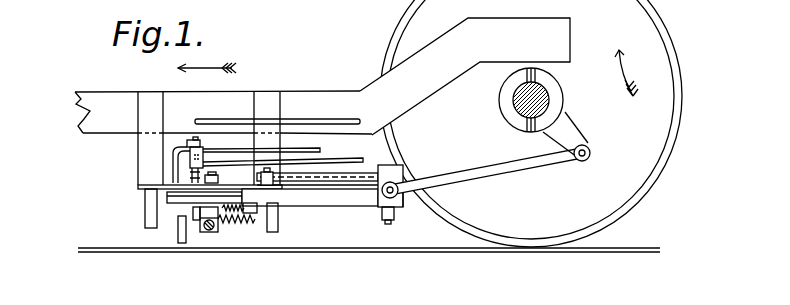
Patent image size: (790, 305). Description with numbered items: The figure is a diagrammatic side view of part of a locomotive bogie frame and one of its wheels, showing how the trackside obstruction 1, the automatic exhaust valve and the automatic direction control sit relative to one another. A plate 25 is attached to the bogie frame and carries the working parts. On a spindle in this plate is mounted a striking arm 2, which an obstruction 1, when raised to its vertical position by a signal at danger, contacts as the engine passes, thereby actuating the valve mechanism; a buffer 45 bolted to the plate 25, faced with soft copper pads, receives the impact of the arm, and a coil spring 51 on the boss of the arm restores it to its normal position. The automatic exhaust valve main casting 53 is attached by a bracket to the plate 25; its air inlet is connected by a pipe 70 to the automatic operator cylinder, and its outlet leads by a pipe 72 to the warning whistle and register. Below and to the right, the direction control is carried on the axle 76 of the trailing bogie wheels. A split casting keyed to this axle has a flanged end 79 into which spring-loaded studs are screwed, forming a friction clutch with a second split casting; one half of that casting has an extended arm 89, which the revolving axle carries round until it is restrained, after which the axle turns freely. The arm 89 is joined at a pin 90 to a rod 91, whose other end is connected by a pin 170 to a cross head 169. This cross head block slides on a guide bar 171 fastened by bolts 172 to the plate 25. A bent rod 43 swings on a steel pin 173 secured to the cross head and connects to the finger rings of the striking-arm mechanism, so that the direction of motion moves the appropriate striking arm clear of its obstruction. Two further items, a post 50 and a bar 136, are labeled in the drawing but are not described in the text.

The obstruction 1 is at (180, 241).
The striking arm 2 is at (211, 232).
The plate 25 is at (138, 188).
The bent rod 43 is at (353, 207).
The buffer 45 is at (145, 212).
The post 50 is at (275, 232).
The coil spring 51 is at (246, 224).
The automatic exhaust valve main casting 53 is at (190, 153).
The pipe 70 is at (303, 149).
The pipe 72 is at (338, 159).
The axle 76 is at (541, 92).
The flanged end 79 is at (557, 101).
The extended arm 89 is at (568, 129).
The pin 90 is at (584, 161).
The rod 91 is at (489, 172).
The bar 136 is at (358, 119).
The cross head 169 is at (405, 203).
The pin 170 is at (402, 186).
The guide bar 171 is at (332, 182).
The bolt 172 is at (272, 168).
The steel pin 173 is at (393, 224).